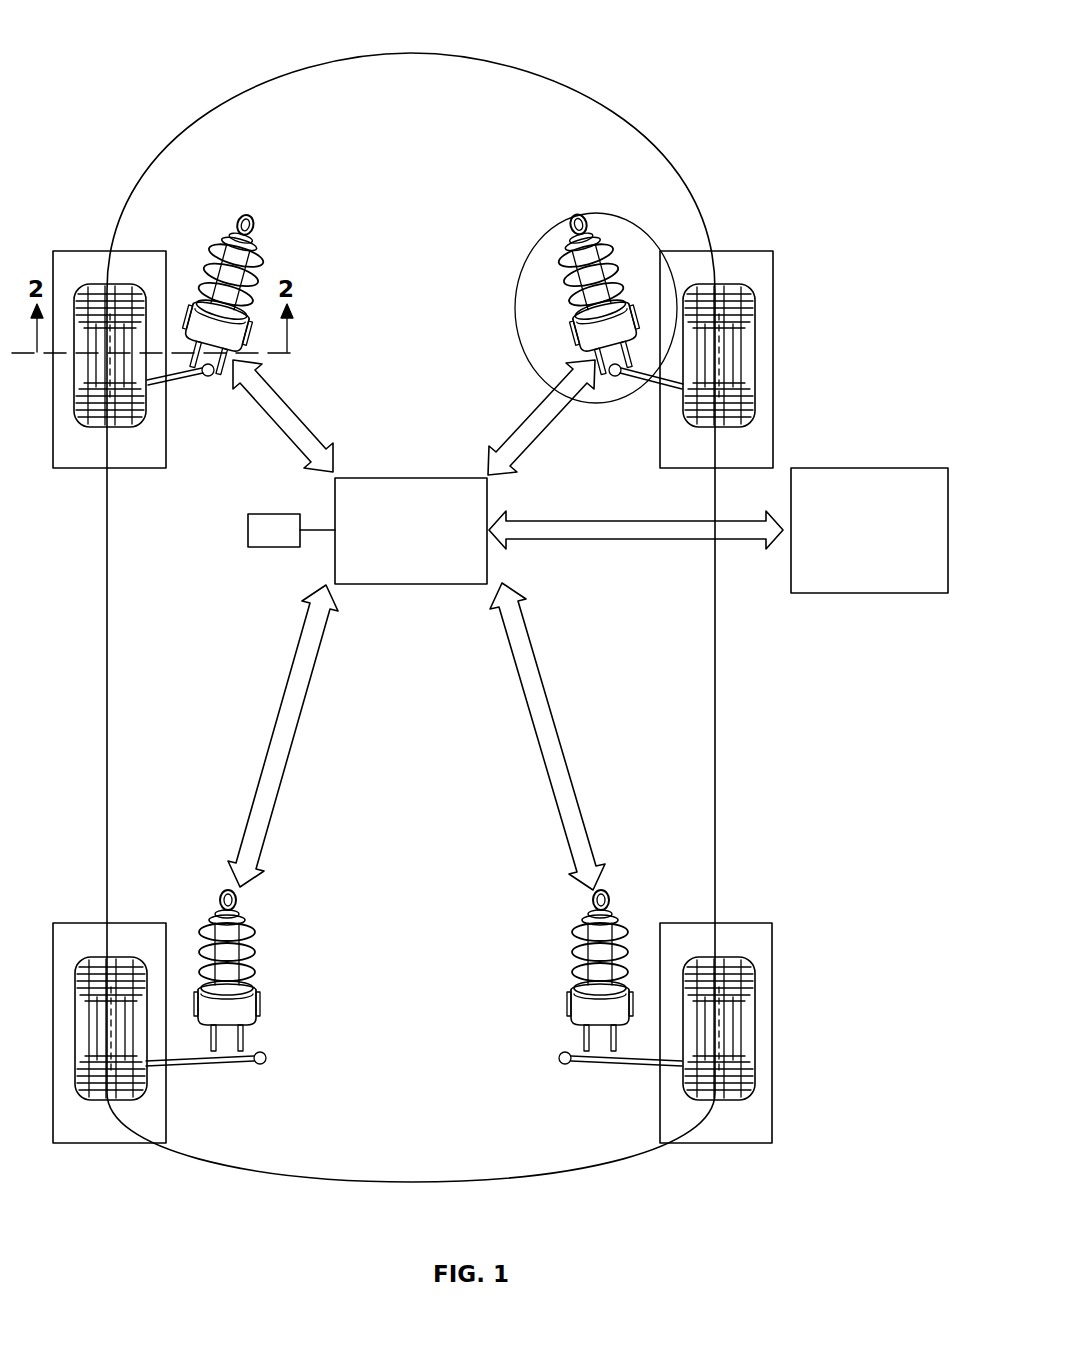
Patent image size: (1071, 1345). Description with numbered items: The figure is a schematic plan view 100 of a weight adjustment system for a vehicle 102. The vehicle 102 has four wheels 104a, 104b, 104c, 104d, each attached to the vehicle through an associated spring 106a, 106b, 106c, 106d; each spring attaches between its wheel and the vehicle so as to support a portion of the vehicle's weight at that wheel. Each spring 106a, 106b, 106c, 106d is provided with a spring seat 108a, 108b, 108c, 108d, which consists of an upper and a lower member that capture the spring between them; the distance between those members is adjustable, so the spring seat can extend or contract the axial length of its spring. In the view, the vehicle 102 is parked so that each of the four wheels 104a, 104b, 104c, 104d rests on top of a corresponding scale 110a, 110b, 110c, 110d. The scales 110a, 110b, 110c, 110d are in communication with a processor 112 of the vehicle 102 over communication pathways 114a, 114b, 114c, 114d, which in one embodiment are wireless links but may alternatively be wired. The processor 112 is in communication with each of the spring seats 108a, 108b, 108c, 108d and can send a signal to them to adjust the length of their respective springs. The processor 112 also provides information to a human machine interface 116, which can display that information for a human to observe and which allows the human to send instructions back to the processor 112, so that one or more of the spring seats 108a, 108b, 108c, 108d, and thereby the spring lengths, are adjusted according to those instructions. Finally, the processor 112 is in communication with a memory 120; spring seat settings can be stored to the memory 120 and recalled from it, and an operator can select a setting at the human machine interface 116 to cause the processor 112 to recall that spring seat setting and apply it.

The plan view 100 is at (175, 38).
The vehicle 102 is at (620, 113).
The wheel 104a is at (108, 285).
The wheel 104b is at (755, 330).
The wheel 104c is at (100, 957).
The wheel 104d is at (755, 995).
The spring 106a is at (265, 262).
The spring 106b is at (556, 255).
The spring 106c is at (260, 955).
The spring 106d is at (570, 932).
The spring seat 108a is at (238, 340).
The spring seat 108b is at (598, 337).
The spring seat 108c is at (225, 1020).
The spring seat 108d is at (605, 1020).
The scale 110a is at (90, 470).
The scale 110b is at (773, 365).
The scale 110c is at (108, 1143).
The scale 110d is at (773, 1040).
The processor 112 is at (412, 478).
The communication pathway 114a is at (275, 432).
The communication pathway 114b is at (548, 432).
The communication pathway 114c is at (262, 765).
The communication pathway 114d is at (553, 767).
The human machine interface 116 is at (868, 593).
The memory 120 is at (248, 530).